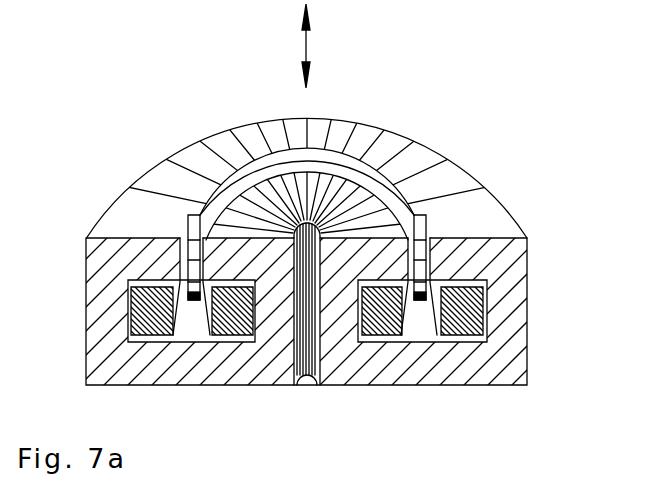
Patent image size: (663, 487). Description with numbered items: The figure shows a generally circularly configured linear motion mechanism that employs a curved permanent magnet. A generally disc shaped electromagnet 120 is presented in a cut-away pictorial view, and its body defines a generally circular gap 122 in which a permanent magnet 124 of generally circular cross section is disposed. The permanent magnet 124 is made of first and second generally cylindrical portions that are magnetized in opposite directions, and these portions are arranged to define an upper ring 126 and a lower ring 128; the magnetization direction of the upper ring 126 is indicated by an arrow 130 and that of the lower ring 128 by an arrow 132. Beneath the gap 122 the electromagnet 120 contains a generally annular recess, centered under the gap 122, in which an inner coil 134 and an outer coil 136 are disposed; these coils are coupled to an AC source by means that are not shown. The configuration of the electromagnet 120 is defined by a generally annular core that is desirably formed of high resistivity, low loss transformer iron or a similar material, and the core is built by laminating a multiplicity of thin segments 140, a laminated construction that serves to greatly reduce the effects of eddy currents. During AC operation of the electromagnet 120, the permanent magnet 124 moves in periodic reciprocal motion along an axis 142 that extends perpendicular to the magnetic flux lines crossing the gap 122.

The electromagnet 120 is at (463, 167).
The gap 122 is at (428, 258).
The permanent magnet 124 is at (383, 197).
The upper ring 126 is at (421, 223).
The lower ring 128 is at (423, 297).
The arrow 130 is at (188, 233).
The arrow 132 is at (415, 295).
The inner coil 134 is at (238, 328).
The outer coil 136 is at (152, 328).
The thin segments 140 is at (210, 137).
The axis 142 is at (306, 50).